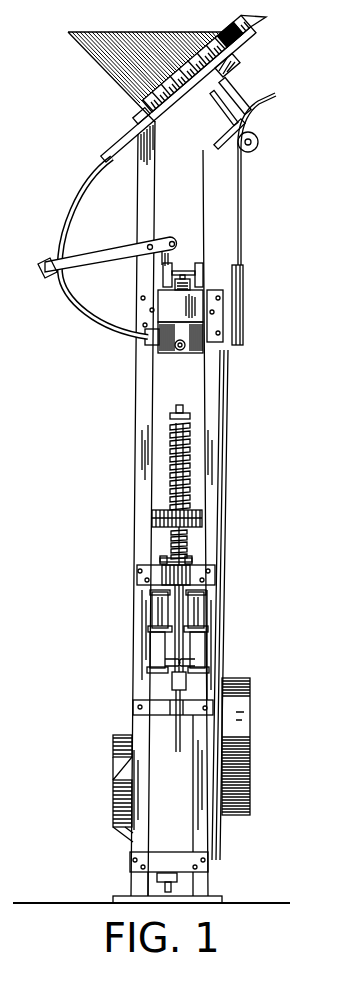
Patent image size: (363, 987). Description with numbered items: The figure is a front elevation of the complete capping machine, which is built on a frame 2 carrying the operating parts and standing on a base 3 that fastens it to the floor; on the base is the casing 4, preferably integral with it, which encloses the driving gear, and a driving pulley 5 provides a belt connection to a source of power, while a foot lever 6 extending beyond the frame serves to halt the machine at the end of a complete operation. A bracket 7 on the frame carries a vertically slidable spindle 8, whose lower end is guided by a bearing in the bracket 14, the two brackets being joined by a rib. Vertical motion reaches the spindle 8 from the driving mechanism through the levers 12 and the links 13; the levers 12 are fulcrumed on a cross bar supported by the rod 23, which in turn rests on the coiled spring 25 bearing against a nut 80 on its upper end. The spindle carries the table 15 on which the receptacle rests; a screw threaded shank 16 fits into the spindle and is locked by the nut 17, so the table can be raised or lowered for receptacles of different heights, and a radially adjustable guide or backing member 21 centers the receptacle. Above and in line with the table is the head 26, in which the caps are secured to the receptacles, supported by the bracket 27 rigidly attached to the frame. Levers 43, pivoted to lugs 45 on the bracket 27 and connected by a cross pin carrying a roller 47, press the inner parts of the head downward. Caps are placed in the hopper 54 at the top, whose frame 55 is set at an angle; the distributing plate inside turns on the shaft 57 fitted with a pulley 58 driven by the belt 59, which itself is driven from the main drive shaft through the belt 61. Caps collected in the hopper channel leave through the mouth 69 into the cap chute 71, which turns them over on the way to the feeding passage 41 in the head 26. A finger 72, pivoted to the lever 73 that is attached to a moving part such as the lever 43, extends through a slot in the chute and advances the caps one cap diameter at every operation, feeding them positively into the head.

The frame 2 is at (146, 406).
The base 3 is at (213, 903).
The casing 4 is at (118, 828).
The driving pulley 5 is at (246, 781).
The foot lever 6 is at (160, 878).
The bracket 7 is at (156, 575).
The spindle 8 is at (184, 621).
The levers 12 is at (152, 606).
The links 13 is at (151, 644).
The bracket 14 is at (140, 707).
The table 15 is at (152, 517).
The screw threaded shank 16 is at (190, 540).
The nut 17 is at (192, 560).
The guide or backing member 21 is at (190, 503).
The rod 23 is at (170, 466).
The coiled spring 25 is at (170, 445).
The head 26 is at (204, 350).
The bracket 27 is at (170, 304).
The feeding passage 41 is at (153, 337).
The levers 43 is at (196, 263).
The lugs 45 is at (208, 274).
The roller 47 is at (177, 285).
The hopper 54 is at (123, 42).
The hopper frame 55 is at (252, 40).
The shaft 57 is at (240, 102).
The pulley 58 is at (258, 103).
The belt 59 is at (242, 206).
The belt 61 is at (229, 460).
The mouth 69 is at (134, 135).
The cap chute 71 is at (92, 187).
The finger 72 is at (54, 274).
The lever 73 is at (101, 259).
The nut 80 is at (190, 415).